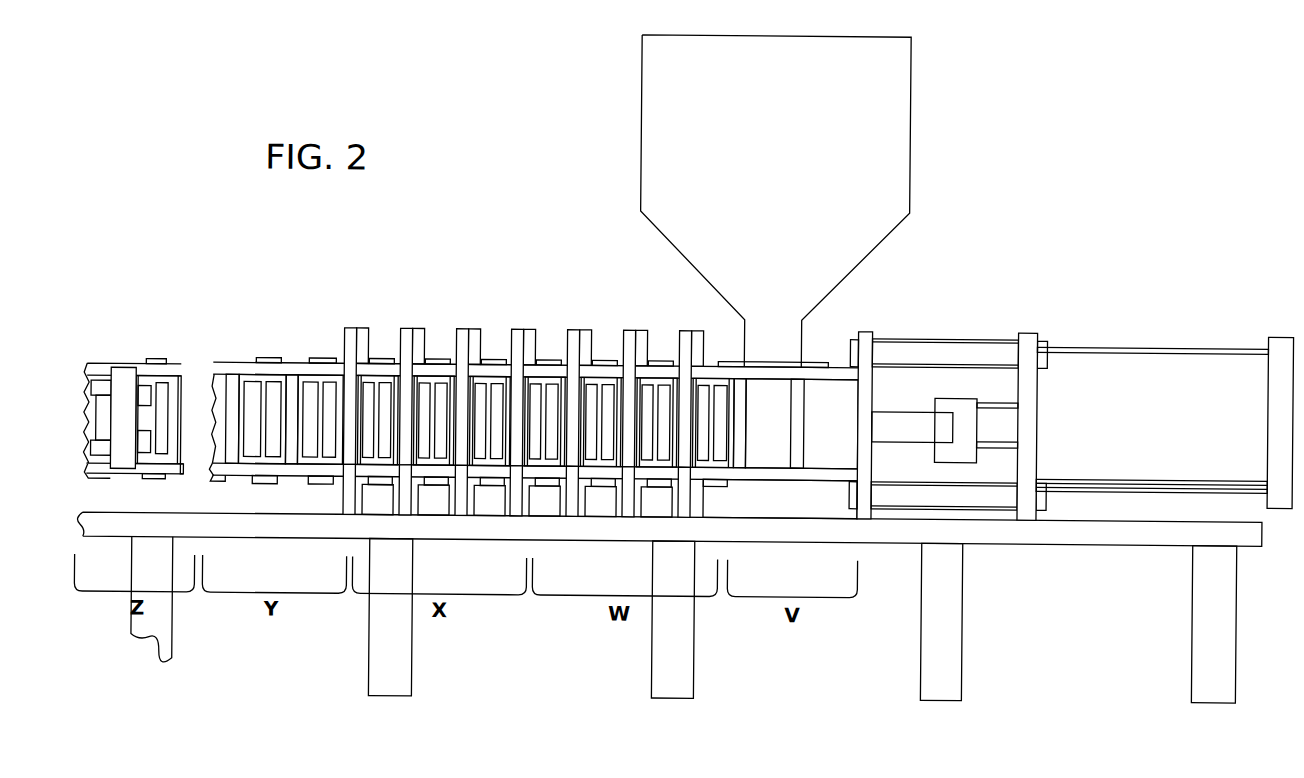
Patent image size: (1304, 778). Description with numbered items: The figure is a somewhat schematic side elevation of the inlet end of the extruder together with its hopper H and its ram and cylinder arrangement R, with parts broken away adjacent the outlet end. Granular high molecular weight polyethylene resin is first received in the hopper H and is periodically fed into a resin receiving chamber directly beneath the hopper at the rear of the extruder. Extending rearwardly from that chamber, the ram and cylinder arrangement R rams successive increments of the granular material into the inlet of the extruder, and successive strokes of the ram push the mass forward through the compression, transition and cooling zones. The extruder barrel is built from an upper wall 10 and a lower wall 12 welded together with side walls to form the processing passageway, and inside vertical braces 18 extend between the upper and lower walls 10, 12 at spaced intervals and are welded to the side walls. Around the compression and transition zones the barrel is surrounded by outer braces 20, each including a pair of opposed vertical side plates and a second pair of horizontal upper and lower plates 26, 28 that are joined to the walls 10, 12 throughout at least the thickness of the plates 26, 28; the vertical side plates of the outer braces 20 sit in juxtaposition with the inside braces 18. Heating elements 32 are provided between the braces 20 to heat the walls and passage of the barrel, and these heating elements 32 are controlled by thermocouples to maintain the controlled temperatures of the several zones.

The upper wall 10 is at (142, 366).
The lower wall 12 is at (143, 465).
The inside vertical brace 18 is at (230, 460).
The outer brace 20 is at (348, 325).
The upper plate 26 is at (363, 325).
The lower plate 28 is at (357, 503).
The heating element 32 is at (157, 356).
The hopper H is at (903, 143).
The ram and cylinder arrangement R is at (947, 329).